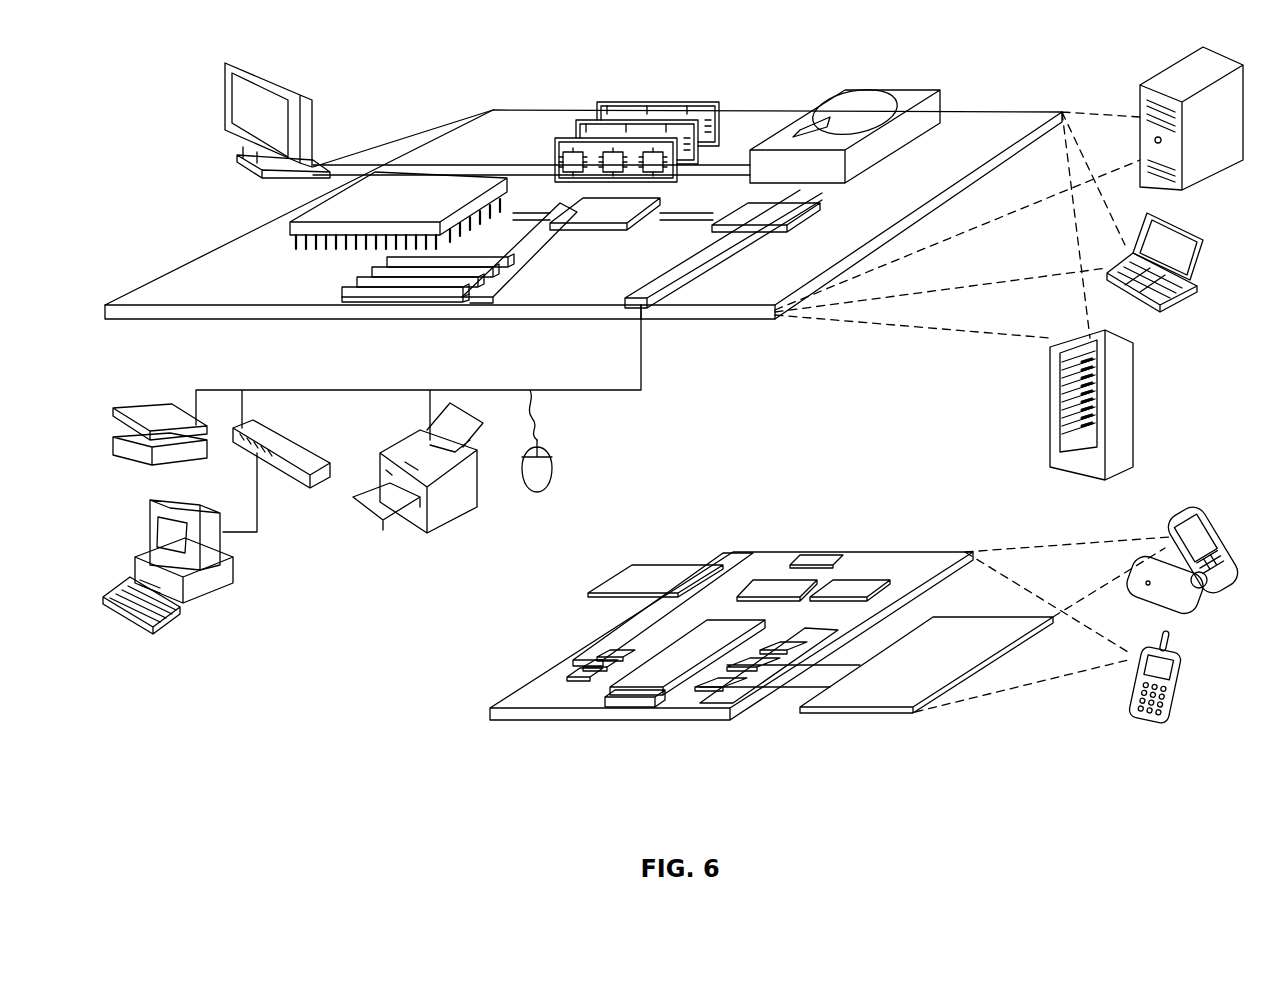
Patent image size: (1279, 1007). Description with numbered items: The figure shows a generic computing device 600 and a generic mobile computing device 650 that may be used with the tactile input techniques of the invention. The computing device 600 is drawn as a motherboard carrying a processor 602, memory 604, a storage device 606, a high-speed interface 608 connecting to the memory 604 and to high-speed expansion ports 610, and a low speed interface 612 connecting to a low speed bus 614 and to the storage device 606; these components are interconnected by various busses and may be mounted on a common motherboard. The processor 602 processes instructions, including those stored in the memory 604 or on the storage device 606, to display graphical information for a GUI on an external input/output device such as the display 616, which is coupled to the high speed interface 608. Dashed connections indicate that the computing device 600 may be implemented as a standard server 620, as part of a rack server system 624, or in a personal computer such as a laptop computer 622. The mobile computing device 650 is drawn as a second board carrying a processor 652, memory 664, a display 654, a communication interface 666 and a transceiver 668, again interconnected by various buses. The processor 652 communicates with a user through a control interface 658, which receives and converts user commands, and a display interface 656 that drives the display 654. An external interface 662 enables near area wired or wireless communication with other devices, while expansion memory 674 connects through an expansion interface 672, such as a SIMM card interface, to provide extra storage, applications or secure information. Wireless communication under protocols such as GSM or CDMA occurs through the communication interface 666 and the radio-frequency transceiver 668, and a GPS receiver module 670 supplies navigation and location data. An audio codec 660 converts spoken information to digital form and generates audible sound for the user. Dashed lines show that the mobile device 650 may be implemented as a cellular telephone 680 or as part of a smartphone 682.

The computing device 600 is at (413, 82).
The processor 602 is at (300, 227).
The memory 604 is at (605, 103).
The storage device 606 is at (837, 91).
The high-speed interface 608 is at (545, 196).
The high-speed expansion ports 610 is at (357, 278).
The low speed interface 612 is at (747, 213).
The low speed bus 614 is at (643, 305).
The display 616 is at (227, 63).
The standard server 620 is at (1140, 92).
The laptop computer 622 is at (1200, 241).
The rack server system 624 is at (1050, 428).
The mobile computing device 650 is at (462, 726).
The processor 652 is at (660, 680).
The display 654 is at (893, 693).
The display interface 656 is at (735, 690).
The control interface 658 is at (765, 668).
The audio codec 660 is at (783, 652).
The external interface 662 is at (628, 698).
The memory 664 is at (580, 668).
The communication interface 666 is at (777, 587).
The transceiver 668 is at (850, 587).
The GPS receiver module 670 is at (823, 557).
The expansion interface 672 is at (710, 568).
The expansion memory 674 is at (633, 567).
The cellular telephone 680 is at (1175, 485).
The smartphone 682 is at (1127, 683).